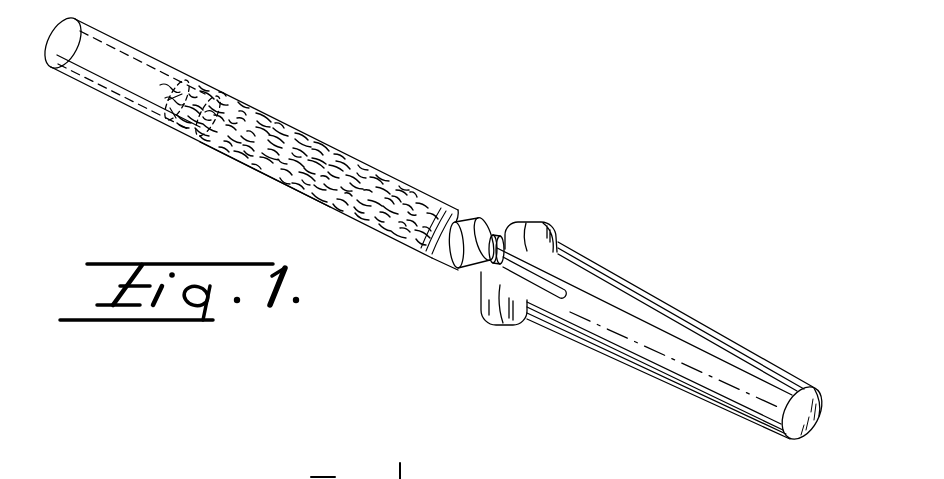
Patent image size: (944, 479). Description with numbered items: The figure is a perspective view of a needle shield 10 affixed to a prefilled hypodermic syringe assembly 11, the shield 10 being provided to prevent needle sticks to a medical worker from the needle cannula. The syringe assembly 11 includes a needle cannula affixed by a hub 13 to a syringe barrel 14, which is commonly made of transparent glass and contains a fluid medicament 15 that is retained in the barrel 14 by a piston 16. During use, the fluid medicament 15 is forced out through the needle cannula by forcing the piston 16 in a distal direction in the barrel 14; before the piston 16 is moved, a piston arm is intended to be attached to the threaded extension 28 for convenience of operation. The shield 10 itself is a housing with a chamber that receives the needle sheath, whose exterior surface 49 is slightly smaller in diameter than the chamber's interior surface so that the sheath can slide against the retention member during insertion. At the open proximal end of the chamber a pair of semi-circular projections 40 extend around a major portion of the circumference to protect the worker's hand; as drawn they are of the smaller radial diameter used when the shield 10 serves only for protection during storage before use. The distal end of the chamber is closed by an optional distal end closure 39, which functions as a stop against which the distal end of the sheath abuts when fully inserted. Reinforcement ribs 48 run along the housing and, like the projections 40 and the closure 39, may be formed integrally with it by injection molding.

The needle shield 10 is at (680, 296).
The prefilled hypodermic syringe assembly 11 is at (356, 138).
The hub 13 is at (452, 279).
The syringe barrel 14 is at (418, 176).
The fluid medicament 15 is at (313, 196).
The piston 16 is at (188, 105).
The threaded extension 28 is at (187, 82).
The distal end closure 39 is at (802, 443).
The semi-circular projections 40 is at (533, 221).
The reinforcement ribs 48 is at (663, 383).
The exterior surface of the sheath 49 is at (735, 385).